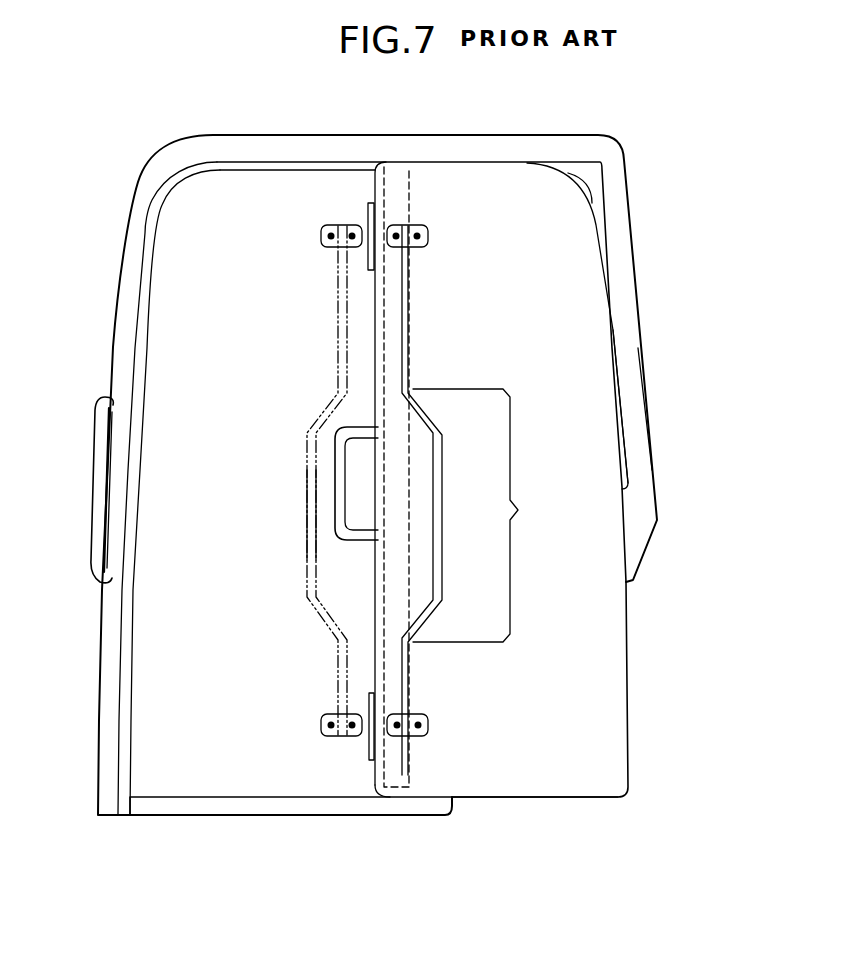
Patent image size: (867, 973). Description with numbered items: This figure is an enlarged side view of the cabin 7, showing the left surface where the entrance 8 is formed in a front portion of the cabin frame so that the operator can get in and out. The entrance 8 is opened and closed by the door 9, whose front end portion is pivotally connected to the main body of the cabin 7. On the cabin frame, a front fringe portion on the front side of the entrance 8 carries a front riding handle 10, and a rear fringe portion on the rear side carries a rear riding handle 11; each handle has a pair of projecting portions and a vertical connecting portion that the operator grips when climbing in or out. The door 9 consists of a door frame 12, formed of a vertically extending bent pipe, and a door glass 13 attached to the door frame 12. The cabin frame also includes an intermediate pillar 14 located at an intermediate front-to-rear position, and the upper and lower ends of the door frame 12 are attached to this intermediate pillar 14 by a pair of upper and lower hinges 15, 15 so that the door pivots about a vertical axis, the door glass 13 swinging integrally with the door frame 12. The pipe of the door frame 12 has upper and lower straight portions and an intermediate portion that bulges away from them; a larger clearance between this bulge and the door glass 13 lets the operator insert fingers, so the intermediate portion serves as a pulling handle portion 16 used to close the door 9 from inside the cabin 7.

The cabin 7 is at (343, 133).
The entrance 8 is at (202, 220).
The door 9 is at (614, 307).
The front riding handle 10 is at (96, 470).
The rear riding handle 11 is at (335, 478).
The door frame 12 is at (400, 343).
The door glass 13 is at (598, 640).
The intermediate pillar 14 is at (410, 207).
The hinges 15 is at (430, 233).
The pulling handle portion 16 is at (478, 500).